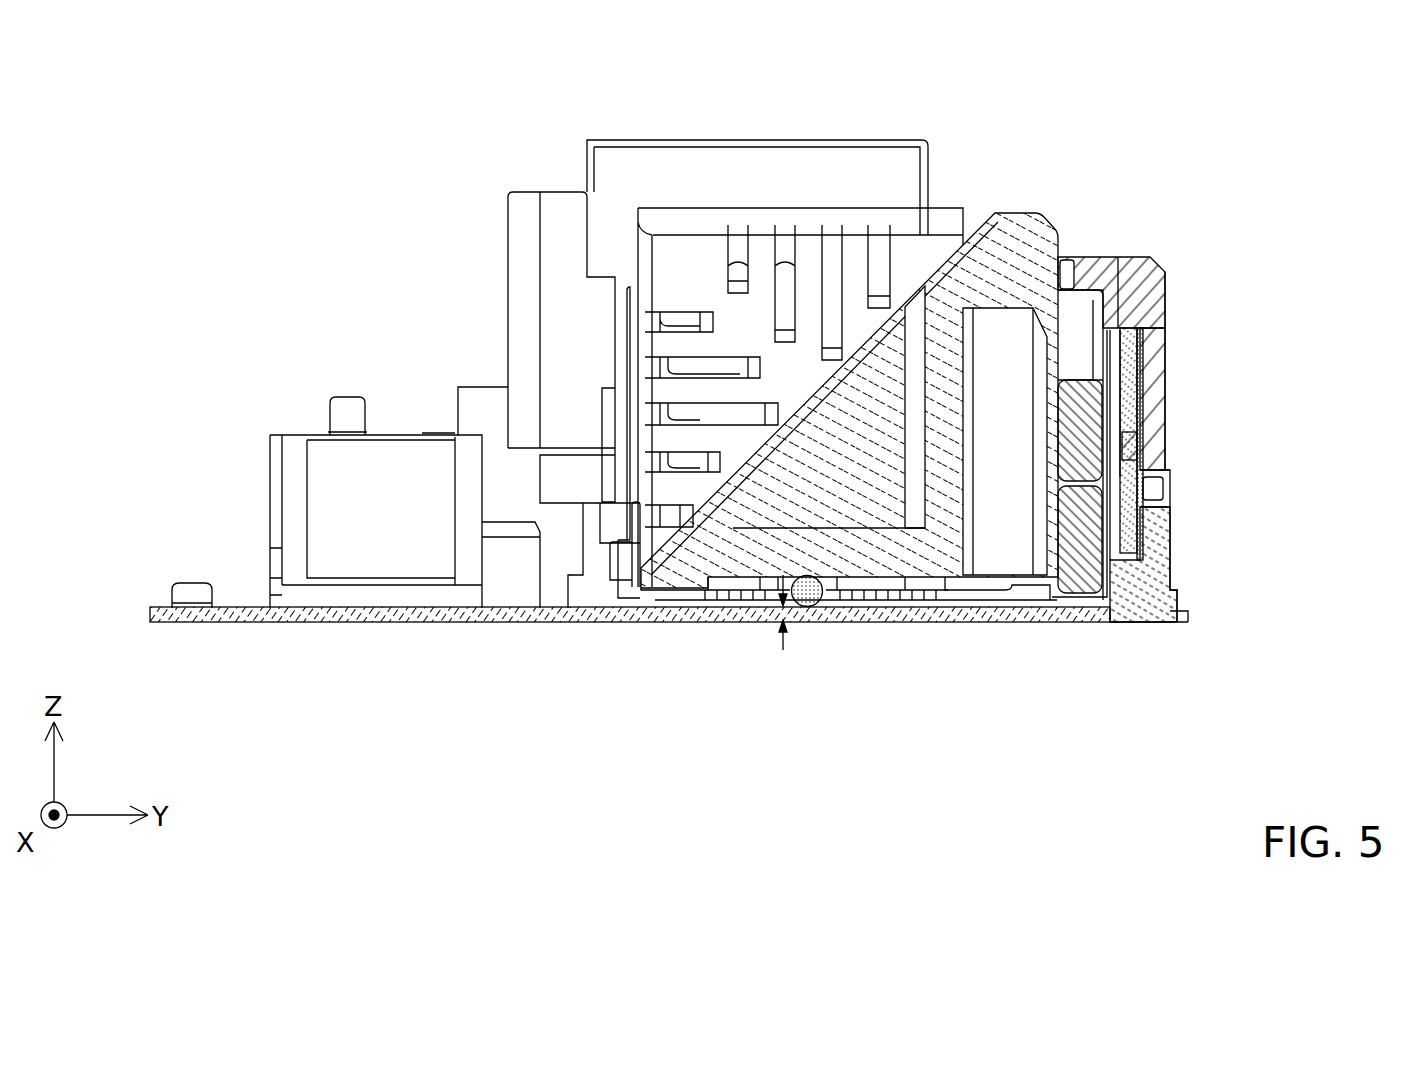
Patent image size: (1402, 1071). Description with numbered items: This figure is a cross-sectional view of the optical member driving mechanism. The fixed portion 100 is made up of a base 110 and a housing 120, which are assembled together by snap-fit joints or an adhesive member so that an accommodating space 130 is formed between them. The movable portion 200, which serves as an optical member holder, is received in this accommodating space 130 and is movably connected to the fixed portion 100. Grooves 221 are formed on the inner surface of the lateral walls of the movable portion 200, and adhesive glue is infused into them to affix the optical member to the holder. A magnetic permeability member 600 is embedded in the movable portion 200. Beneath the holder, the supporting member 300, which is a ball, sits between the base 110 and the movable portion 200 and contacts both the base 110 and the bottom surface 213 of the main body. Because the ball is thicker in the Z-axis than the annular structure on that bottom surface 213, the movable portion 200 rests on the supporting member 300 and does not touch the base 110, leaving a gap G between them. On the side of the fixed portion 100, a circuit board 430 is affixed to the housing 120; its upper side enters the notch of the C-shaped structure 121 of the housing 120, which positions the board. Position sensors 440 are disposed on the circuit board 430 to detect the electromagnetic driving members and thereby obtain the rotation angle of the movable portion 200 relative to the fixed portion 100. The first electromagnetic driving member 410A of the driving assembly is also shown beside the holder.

The magnetic permeability member 600 is at (640, 178).
The grooves 221 is at (787, 245).
The movable portion 200 is at (1022, 235).
The bottom surface 213 is at (887, 577).
The supporting member 300 is at (810, 598).
The gap G is at (783, 652).
The accommodating space 130 is at (1078, 335).
The first electromagnetic driving member 410A is at (1132, 357).
The circuit board 430 is at (1140, 378).
The position sensors 440 is at (1132, 442).
The C-shaped structure 121 is at (1140, 334).
The fixed portion 100 is at (1297, 433).
The housing 120 is at (1152, 450).
The base 110 is at (1153, 530).